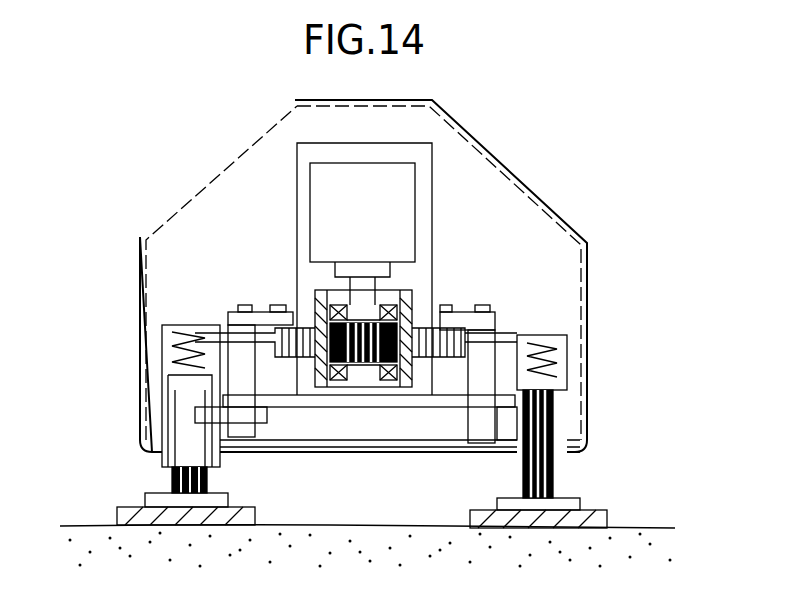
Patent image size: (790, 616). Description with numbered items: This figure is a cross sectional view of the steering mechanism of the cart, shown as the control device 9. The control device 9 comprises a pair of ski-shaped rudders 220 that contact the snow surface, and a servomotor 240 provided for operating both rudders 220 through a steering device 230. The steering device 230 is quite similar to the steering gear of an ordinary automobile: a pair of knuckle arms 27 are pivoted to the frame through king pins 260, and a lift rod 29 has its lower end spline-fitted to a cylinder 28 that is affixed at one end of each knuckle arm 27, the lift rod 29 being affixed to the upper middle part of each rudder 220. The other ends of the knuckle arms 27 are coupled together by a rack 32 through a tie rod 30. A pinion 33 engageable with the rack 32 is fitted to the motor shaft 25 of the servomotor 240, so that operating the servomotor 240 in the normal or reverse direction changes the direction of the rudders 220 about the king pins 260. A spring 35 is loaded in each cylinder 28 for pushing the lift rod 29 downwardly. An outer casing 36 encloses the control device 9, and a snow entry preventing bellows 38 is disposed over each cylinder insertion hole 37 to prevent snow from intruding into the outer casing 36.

The control device 9 is at (512, 148).
The outer casing 36 is at (527, 192).
The cylinder insertion hole 37 is at (587, 392).
The steering device 230 is at (468, 292).
The servomotor for rudder 240 is at (390, 218).
The pinion 33 is at (362, 330).
The shaft 25 is at (366, 407).
The rack 32 is at (310, 407).
The tie rod 30 is at (257, 312).
The knuckle arm 27 is at (222, 316).
The cylinder 28 is at (172, 352).
The spring 35 is at (185, 336).
The snow entry preventing bellows 38 is at (145, 457).
The lift rod 29 is at (170, 483).
The ski-shaped rudder 220 is at (130, 508).
The king pin 260 is at (245, 385).